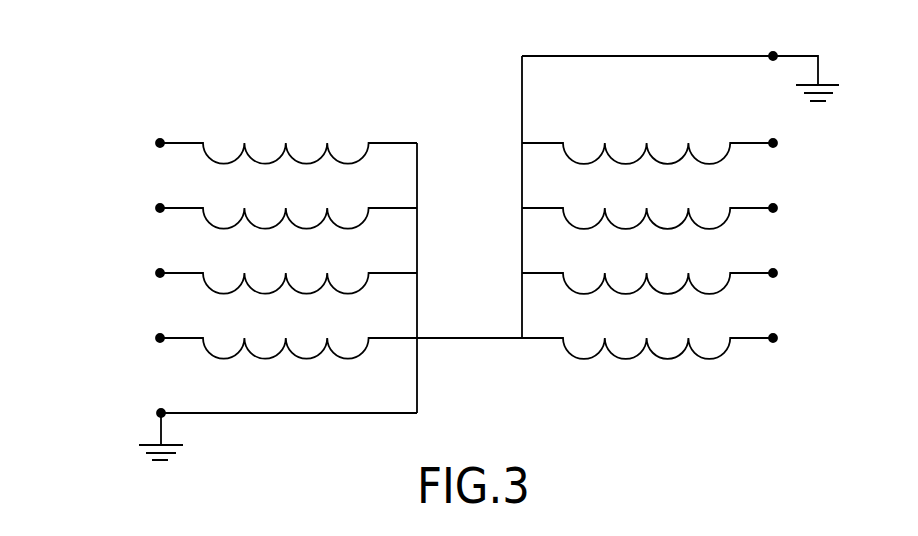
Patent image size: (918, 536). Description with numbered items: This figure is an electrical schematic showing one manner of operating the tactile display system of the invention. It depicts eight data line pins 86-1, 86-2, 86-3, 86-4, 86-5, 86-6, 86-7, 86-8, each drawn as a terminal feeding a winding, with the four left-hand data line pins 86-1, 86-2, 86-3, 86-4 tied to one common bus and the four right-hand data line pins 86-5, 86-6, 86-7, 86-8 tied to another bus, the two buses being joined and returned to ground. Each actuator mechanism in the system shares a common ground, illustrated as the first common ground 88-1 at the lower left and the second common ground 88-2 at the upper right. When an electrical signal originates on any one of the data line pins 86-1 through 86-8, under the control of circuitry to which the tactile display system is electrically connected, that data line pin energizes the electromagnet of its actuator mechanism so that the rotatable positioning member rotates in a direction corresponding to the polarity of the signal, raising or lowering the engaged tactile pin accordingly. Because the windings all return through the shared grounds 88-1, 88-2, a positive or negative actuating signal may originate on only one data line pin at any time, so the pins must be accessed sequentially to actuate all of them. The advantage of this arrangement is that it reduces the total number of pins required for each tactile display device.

The data line pin 86-1 is at (158, 141).
The data line pin 86-2 is at (158, 206).
The data line pin 86-3 is at (158, 271).
The data line pin 86-4 is at (158, 336).
The data line pin 86-5 is at (776, 145).
The data line pin 86-6 is at (776, 210).
The data line pin 86-7 is at (776, 275).
The data line pin 86-8 is at (776, 340).
The common ground 88-1 is at (159, 411).
The common ground 88-2 is at (775, 54).